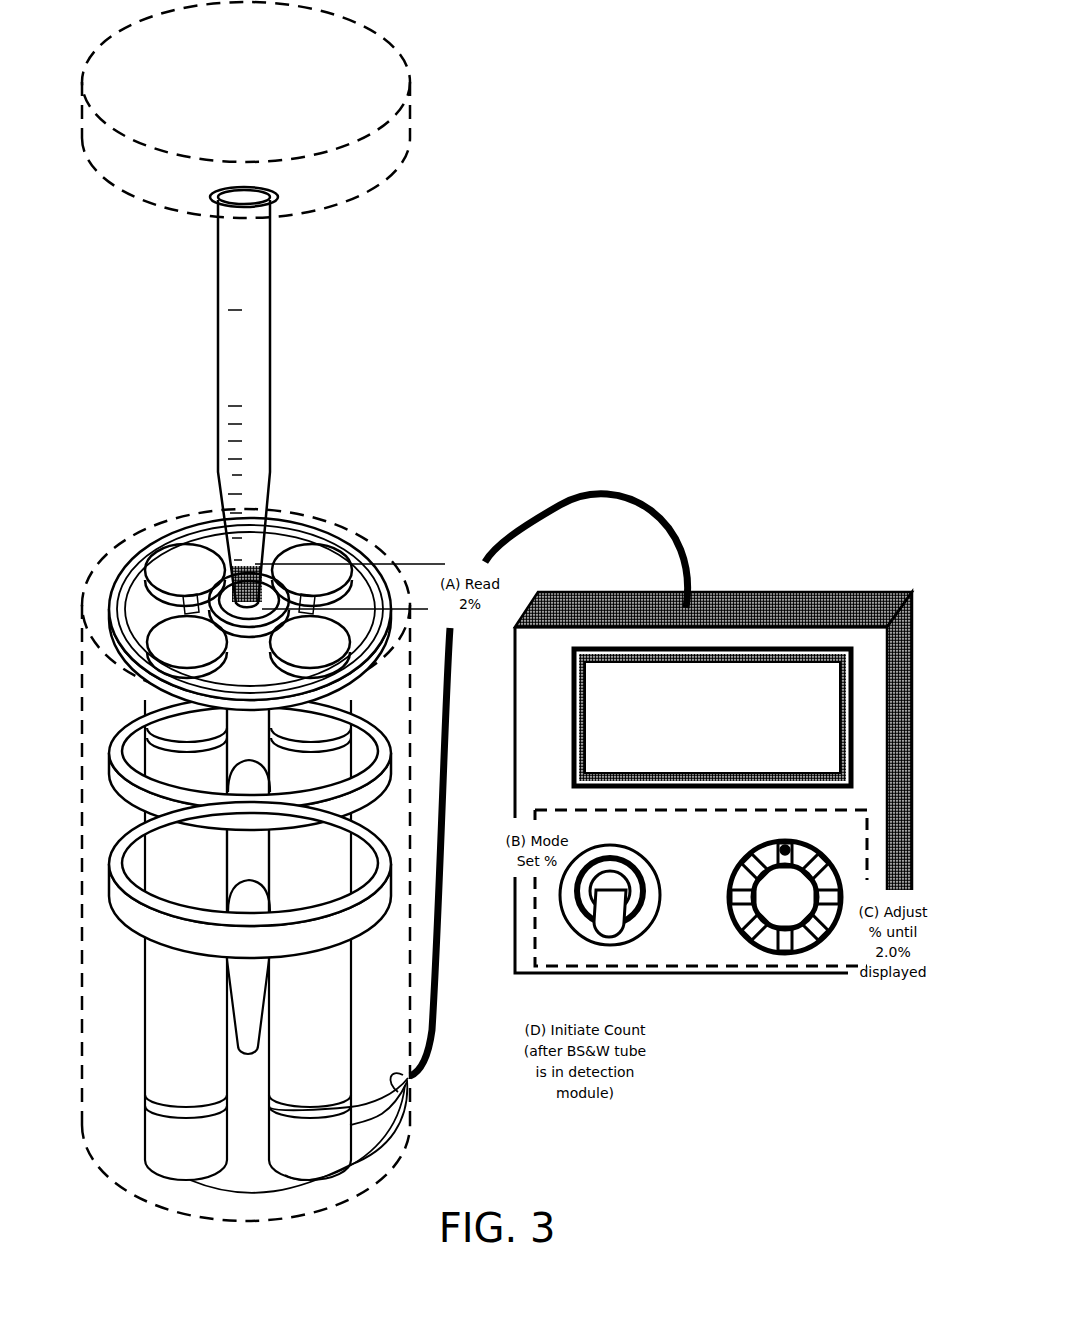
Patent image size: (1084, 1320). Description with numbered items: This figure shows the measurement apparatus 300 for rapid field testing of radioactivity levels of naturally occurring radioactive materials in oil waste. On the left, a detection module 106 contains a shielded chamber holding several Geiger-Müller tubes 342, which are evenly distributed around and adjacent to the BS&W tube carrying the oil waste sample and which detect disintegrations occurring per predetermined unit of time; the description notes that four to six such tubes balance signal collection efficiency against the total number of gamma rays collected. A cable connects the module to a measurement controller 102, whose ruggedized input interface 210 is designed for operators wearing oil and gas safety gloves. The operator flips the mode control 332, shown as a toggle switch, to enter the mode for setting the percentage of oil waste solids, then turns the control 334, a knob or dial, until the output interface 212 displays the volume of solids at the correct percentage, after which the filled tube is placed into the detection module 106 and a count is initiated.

The measurement system / method overview 300 is at (742, 80).
The control 334 is at (333, 88).
The detection module 106 is at (258, 516).
The Geiger-Müller tubes 342 is at (323, 567).
The detection module 102 is at (738, 771).
The output interface 212 is at (790, 708).
The input interface 210 is at (701, 888).
The mode control 332 is at (612, 912).